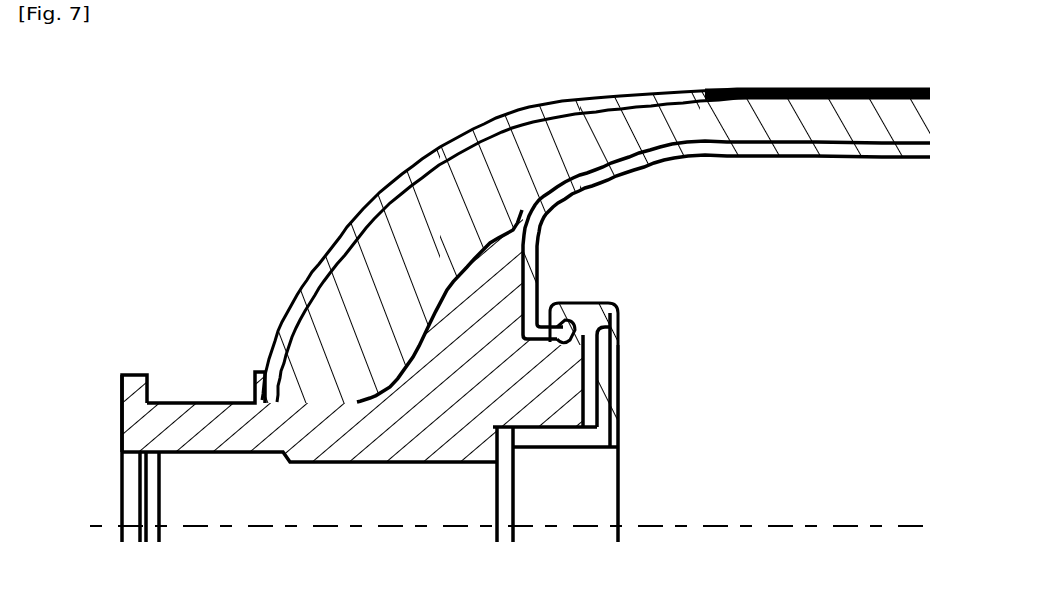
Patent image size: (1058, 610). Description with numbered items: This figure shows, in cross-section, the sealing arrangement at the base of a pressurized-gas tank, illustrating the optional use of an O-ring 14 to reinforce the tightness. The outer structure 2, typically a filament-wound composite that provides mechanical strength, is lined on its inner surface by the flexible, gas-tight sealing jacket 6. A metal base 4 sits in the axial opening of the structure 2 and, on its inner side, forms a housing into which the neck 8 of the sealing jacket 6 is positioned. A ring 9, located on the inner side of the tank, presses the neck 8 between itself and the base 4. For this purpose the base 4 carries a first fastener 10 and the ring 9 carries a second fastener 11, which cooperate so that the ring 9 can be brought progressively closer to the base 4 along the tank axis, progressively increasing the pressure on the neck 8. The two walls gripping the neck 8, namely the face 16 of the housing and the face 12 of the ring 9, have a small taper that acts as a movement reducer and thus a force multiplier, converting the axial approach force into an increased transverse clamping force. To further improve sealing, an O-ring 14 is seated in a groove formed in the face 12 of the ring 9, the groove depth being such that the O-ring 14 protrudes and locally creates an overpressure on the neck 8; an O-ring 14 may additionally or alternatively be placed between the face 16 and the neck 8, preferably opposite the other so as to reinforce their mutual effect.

The structure 2 is at (538, 150).
The base 4 is at (133, 380).
The sealing jacket 6 is at (727, 150).
The neck 8 is at (560, 339).
The ring 9 is at (615, 445).
The first fastener 10 is at (553, 427).
The second fastener 11 is at (555, 484).
The face of the ring 12 is at (547, 318).
The O-ring 14 is at (575, 322).
The face of the housing 16 is at (565, 335).